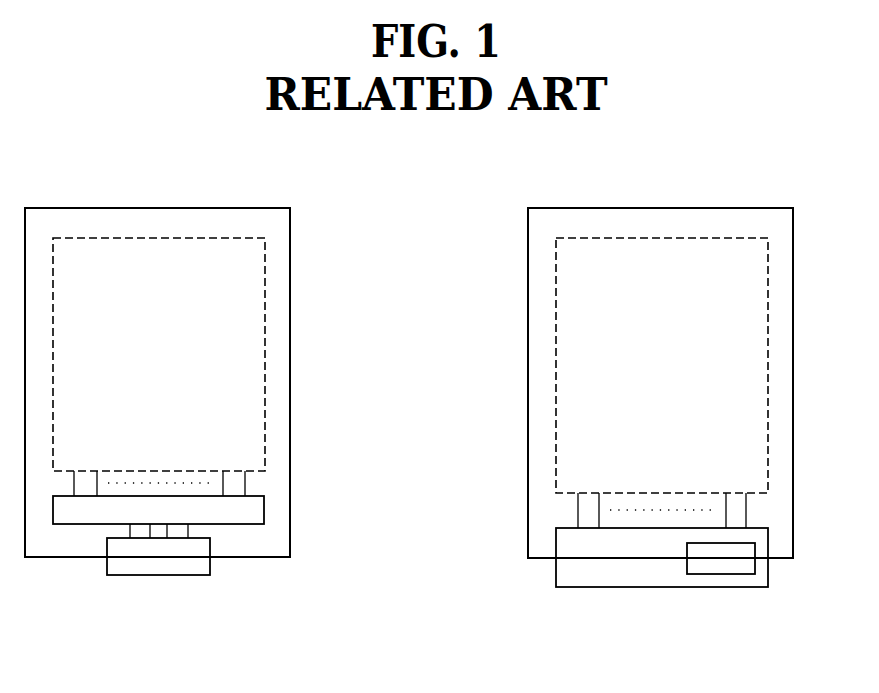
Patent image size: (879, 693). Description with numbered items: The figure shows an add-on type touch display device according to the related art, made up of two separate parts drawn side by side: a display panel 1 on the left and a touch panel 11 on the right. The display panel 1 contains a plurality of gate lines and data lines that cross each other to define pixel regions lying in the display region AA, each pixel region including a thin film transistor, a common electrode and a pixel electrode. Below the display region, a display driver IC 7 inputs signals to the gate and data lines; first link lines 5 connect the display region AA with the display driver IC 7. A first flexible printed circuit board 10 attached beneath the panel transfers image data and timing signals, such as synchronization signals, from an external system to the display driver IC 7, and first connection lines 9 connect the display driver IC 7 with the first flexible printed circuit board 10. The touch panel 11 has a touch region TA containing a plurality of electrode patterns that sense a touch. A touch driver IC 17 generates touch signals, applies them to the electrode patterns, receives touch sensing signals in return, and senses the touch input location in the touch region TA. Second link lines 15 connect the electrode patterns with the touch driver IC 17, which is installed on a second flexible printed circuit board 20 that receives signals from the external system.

The display panel 1 is at (197, 207).
The first link lines 5 is at (245, 482).
The display driver IC 7 is at (265, 508).
The first connection lines 9 is at (188, 529).
The first flexible printed circuit board 10 is at (157, 577).
The touch panel 11 is at (697, 207).
The second link lines 15 is at (746, 509).
The touch driver IC 17 is at (731, 575).
The second flexible printed circuit board 20 is at (769, 567).